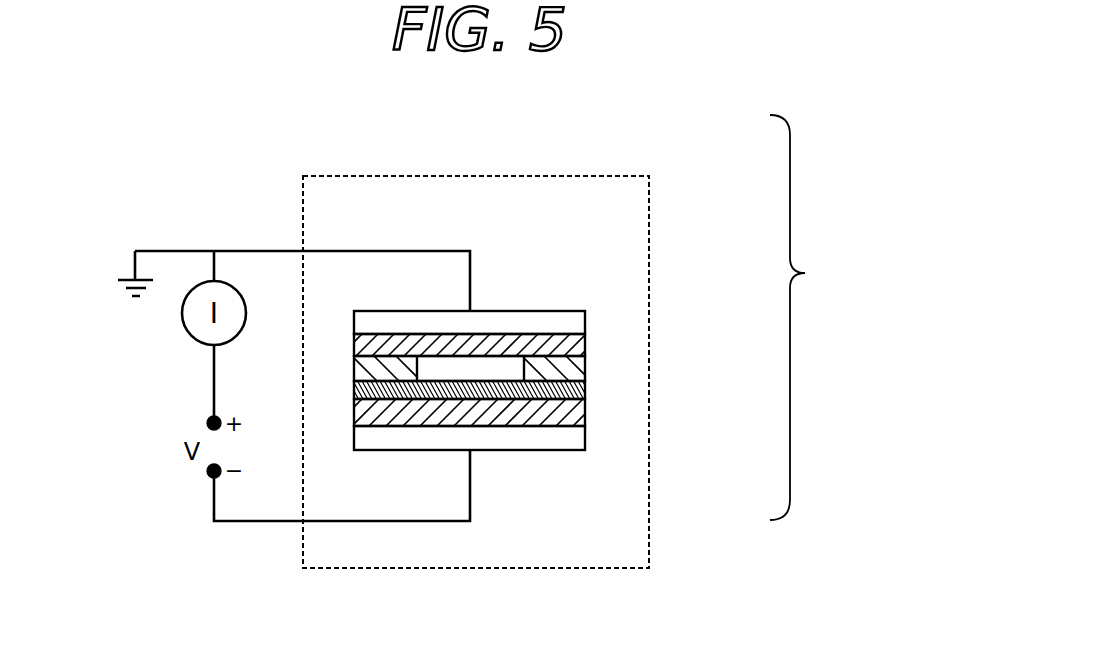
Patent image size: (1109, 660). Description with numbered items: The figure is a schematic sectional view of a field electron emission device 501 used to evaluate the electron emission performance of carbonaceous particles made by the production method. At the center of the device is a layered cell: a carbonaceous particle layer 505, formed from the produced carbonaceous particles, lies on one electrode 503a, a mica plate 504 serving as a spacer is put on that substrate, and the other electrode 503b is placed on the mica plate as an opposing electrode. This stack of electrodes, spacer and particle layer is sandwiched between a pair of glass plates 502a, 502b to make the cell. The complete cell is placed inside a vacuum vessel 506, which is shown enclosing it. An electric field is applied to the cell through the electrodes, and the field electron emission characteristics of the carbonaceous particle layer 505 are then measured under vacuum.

The field electron emission device 501 is at (810, 317).
The glass plate 502a is at (578, 442).
The glass plate 502b is at (578, 323).
The electrode 503a is at (578, 415).
The electrode 503b is at (578, 348).
The mica plate 504 is at (578, 367).
The carbonaceous particle layer 505 is at (578, 393).
The vacuum vessel 506 is at (470, 176).